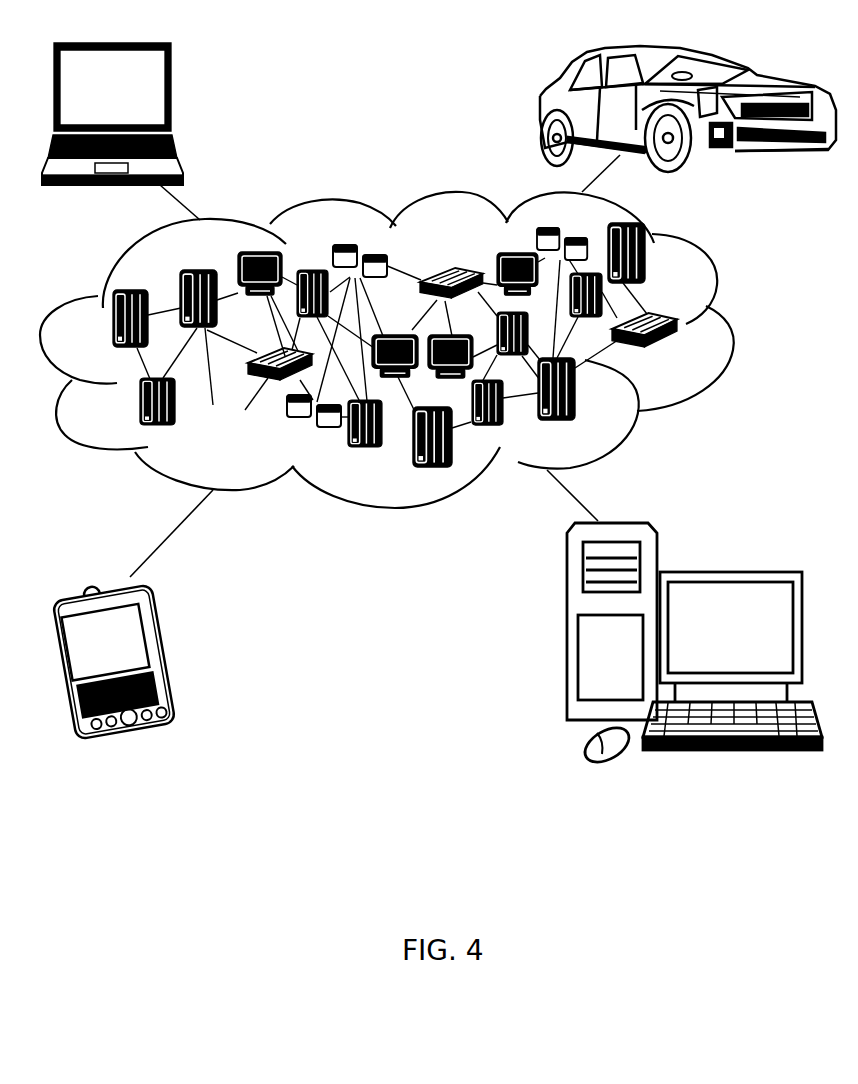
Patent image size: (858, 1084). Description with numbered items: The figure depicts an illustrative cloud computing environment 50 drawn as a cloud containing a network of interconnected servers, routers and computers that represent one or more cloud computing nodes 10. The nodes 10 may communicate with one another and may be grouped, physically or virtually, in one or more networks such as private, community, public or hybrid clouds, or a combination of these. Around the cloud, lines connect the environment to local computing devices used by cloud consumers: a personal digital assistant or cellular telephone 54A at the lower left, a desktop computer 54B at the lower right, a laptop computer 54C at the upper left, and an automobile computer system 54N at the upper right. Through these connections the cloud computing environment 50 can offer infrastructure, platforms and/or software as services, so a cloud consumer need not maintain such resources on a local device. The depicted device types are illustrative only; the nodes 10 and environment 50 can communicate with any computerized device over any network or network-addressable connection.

The cloud computing nodes 10 is at (439, 345).
The cloud computing environment 50 is at (733, 330).
The personal digital assistant (PDA) or cellular telephone 54A is at (163, 652).
The desktop computer 54B is at (730, 570).
The laptop computer 54C is at (172, 97).
The automobile computer system 54N is at (543, 112).